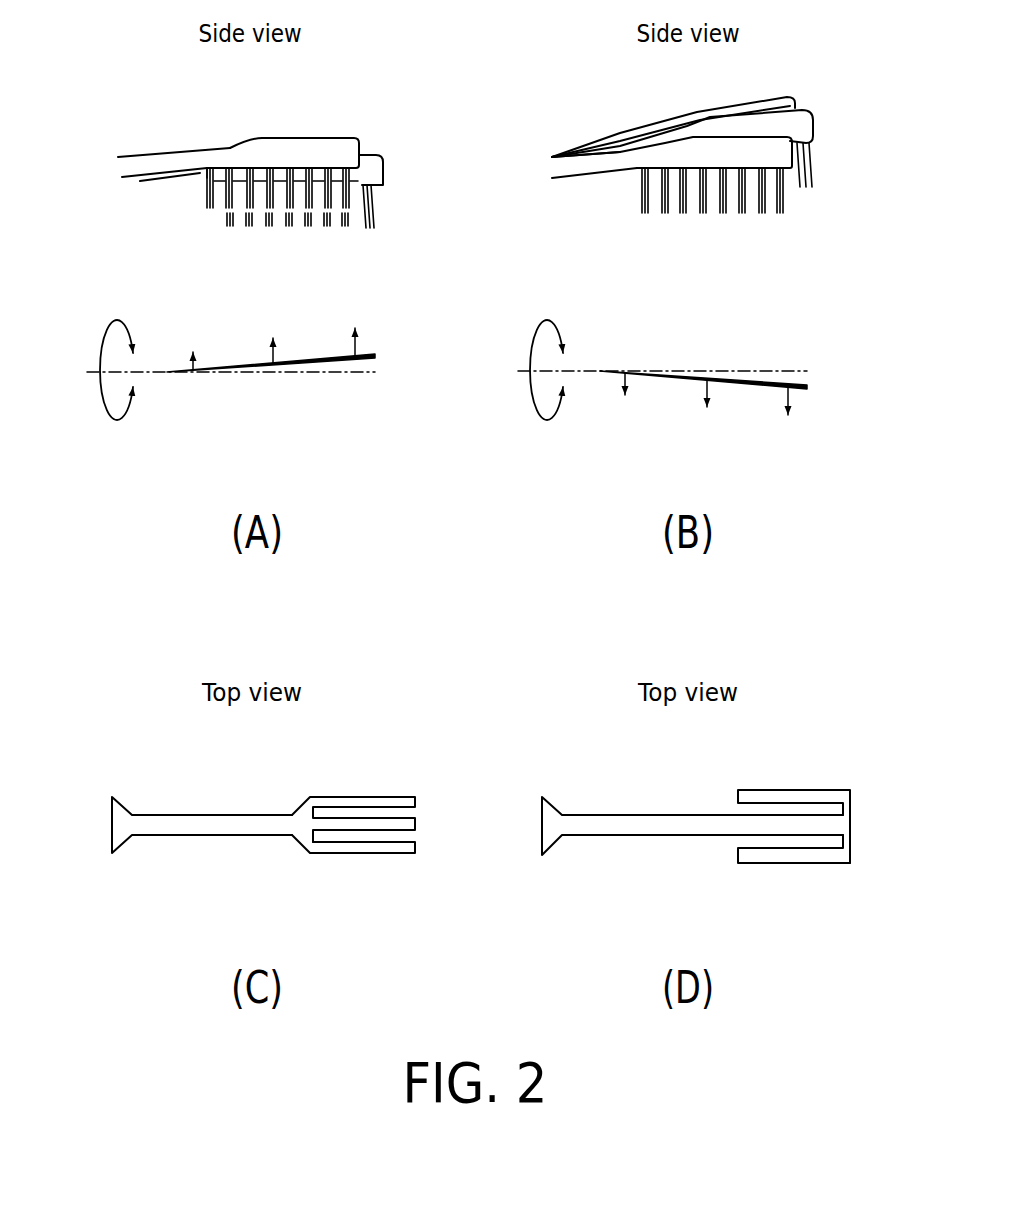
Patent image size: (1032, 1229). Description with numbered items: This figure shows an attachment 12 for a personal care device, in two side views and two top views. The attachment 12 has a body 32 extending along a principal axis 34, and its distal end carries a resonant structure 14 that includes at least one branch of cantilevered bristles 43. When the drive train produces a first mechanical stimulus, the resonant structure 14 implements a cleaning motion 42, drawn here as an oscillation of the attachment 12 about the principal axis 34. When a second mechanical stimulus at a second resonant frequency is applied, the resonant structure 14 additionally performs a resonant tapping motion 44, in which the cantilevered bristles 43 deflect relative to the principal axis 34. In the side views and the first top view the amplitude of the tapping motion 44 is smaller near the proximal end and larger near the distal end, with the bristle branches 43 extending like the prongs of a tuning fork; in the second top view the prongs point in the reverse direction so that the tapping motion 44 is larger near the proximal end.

The attachment 12 is at (118, 123).
The body 32 is at (168, 160).
The resonant structure 14 is at (338, 123).
The branch of cantilevered bristles 43 is at (822, 165).
The cleaning motion 42 is at (117, 423).
The principal axis 34 is at (315, 377).
The tapping motion 44 is at (332, 358).